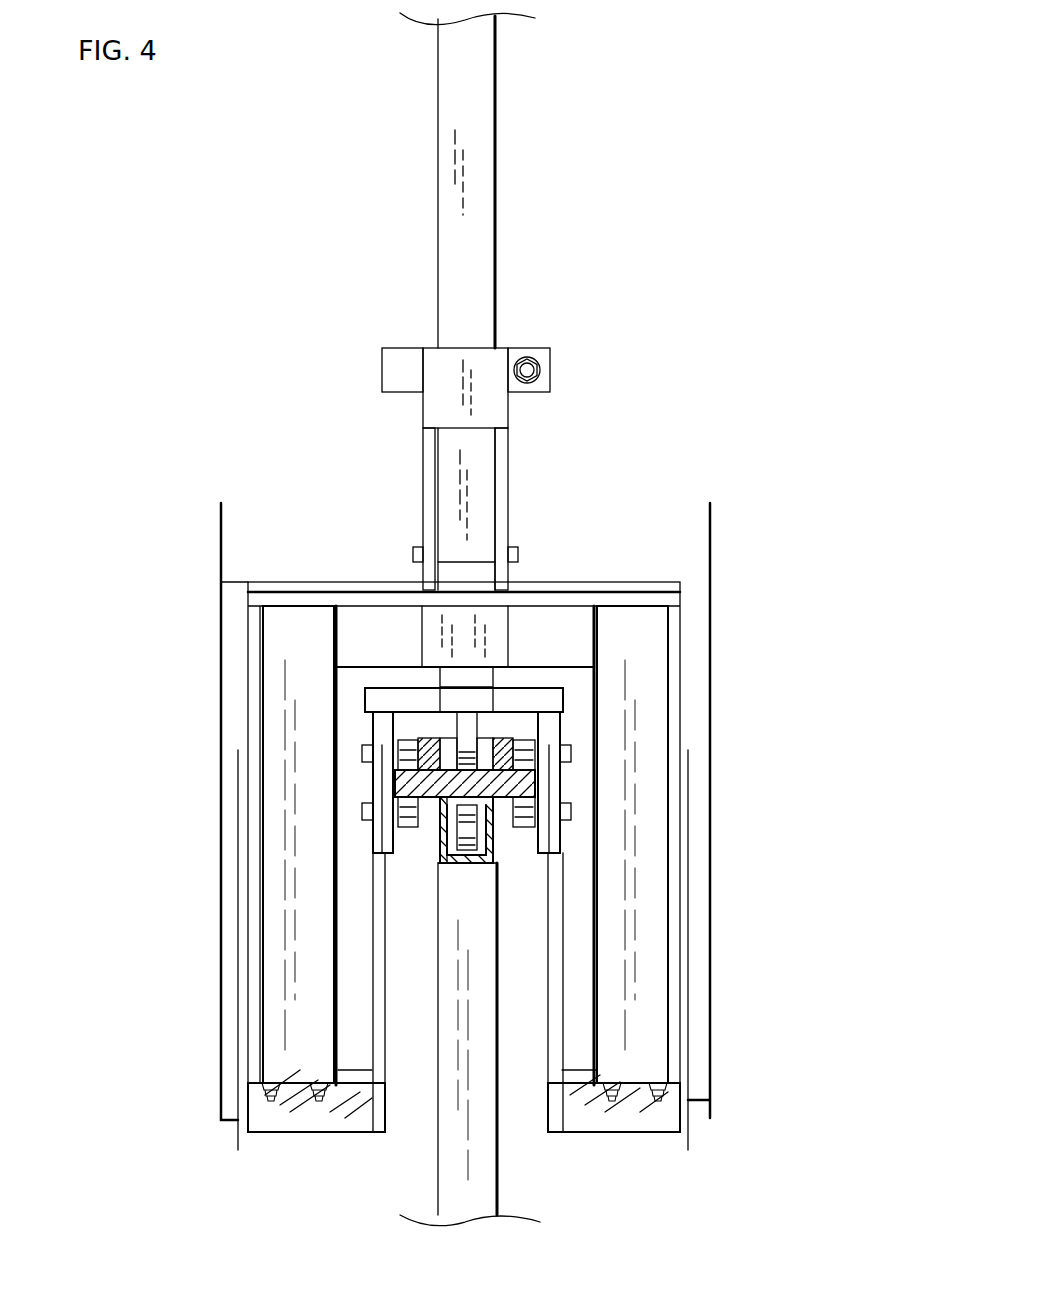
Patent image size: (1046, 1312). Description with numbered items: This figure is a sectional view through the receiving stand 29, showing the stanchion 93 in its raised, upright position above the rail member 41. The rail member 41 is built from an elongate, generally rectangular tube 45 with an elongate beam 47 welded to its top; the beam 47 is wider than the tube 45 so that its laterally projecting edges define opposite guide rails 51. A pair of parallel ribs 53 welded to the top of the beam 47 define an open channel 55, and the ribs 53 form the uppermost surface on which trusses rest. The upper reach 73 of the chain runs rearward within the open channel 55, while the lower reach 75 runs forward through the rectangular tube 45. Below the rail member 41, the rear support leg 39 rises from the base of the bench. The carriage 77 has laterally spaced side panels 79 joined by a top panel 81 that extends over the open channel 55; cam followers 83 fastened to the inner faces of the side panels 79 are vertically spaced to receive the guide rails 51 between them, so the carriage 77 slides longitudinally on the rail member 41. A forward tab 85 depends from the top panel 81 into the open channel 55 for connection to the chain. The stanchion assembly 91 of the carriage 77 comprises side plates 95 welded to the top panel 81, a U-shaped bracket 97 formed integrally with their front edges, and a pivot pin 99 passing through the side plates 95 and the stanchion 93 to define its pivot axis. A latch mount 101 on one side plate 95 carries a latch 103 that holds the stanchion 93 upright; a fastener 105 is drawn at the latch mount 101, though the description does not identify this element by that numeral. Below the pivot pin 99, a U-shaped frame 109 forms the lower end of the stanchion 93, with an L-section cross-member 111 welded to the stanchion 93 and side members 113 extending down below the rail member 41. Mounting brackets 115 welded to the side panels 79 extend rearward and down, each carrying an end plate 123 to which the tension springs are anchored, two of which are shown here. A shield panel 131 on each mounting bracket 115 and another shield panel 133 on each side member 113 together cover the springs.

The receiving stand 29 is at (700, 408).
The rear support leg 39 is at (498, 1165).
The rail member 41 is at (440, 835).
The rectangular tube 45 is at (476, 880).
The beam 47 is at (395, 787).
The guide rails 51 is at (418, 742).
The ribs 53 is at (418, 740).
The open channel 55 is at (462, 738).
The upper reach 73 is at (507, 712).
The lower reach 75 is at (462, 864).
The carriage 77 is at (585, 827).
The side panels 79 is at (380, 842).
The top panel 81 is at (560, 676).
The cam followers 83 is at (398, 755).
The forward tab 85 is at (498, 706).
The stanchion assembly 91 is at (398, 322).
The stanchion 93 is at (497, 107).
The side plates 95 is at (420, 497).
The U-shaped bracket 97 is at (478, 368).
The pivot pin 99 is at (413, 552).
The latch mount 101 is at (552, 372).
The latch 103 is at (383, 368).
The set screw 105 is at (512, 355).
The U-shaped frame 109 is at (250, 1015).
The cross-member 111 is at (340, 655).
The side members 113 is at (250, 965).
The mounting brackets 115 is at (262, 1093).
The end plate 123 is at (318, 1135).
The shield panel 131 is at (238, 1148).
The shield panel 133 is at (220, 640).